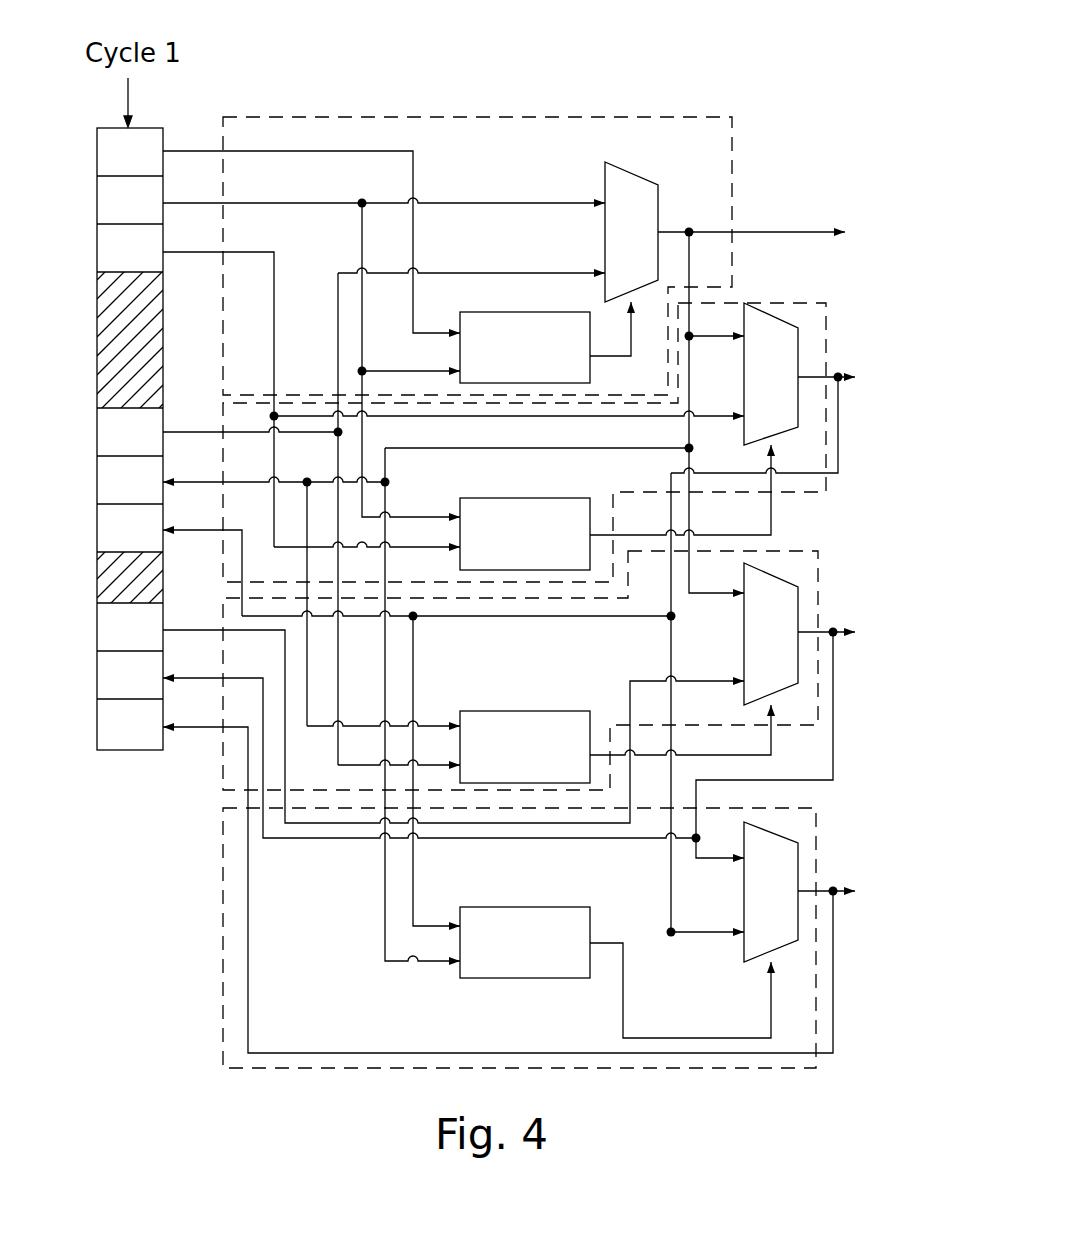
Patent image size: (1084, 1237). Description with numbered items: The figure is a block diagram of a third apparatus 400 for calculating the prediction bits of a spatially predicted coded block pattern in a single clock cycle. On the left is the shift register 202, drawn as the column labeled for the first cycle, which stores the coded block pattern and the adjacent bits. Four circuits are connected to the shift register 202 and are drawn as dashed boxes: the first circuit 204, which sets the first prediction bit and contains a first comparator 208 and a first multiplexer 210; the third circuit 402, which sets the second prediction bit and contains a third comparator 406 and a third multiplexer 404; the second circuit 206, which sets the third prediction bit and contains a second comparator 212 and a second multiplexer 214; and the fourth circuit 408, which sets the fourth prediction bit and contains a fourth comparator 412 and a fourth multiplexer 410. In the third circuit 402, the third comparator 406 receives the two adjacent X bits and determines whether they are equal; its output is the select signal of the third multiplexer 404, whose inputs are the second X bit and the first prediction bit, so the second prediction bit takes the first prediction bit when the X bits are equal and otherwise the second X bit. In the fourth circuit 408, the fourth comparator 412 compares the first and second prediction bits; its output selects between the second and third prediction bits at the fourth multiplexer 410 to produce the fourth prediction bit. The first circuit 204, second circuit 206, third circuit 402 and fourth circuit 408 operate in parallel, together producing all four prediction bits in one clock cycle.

The third apparatus 400 is at (726, 62).
The shift register 202 is at (127, 750).
The first circuit 204 is at (733, 135).
The first multiplexer 210 is at (630, 188).
The first comparator 208 is at (505, 312).
The third circuit 402 is at (827, 345).
The third multiplexer 404 is at (770, 322).
The third comparator 406 is at (505, 498).
The second circuit 206 is at (822, 592).
The second multiplexer 214 is at (770, 580).
The second comparator 212 is at (505, 711).
The fourth circuit 408 is at (820, 858).
The fourth multiplexer 410 is at (770, 835).
The fourth comparator 412 is at (505, 907).